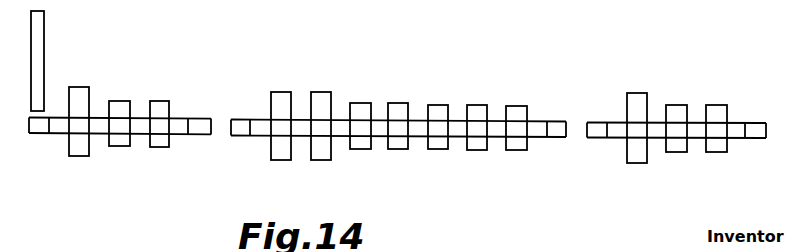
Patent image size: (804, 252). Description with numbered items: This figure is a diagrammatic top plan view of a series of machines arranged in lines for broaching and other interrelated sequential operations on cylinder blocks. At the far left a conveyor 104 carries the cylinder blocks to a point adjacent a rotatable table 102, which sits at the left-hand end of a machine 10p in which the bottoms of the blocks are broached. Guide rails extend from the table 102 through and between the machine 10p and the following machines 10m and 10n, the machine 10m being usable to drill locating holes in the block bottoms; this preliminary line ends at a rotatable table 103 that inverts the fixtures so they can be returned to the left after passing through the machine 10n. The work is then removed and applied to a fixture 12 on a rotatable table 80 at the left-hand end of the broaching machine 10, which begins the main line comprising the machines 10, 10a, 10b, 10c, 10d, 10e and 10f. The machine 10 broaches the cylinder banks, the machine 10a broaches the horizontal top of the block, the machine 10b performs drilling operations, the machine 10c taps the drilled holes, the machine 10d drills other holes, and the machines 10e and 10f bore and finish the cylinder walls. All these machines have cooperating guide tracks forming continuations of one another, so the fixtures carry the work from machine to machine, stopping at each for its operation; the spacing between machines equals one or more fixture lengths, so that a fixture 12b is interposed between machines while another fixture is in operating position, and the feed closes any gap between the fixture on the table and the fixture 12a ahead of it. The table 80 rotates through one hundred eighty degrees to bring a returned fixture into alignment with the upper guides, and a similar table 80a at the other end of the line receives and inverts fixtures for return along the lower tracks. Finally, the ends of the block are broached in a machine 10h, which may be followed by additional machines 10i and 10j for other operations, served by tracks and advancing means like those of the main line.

The broaching machine 10 is at (280, 97).
The machine 10a is at (320, 95).
The machine 10b is at (363, 110).
The machine 10c is at (402, 100).
The machine 10d is at (439, 111).
The machine 10e is at (479, 110).
The machine 10f is at (515, 113).
The machine 10h is at (632, 100).
The machine 10i is at (677, 112).
The machine 10j is at (715, 112).
The machine 10m is at (122, 100).
The machine 10n is at (153, 104).
The machine 10p is at (75, 95).
The fixture 12 is at (281, 128).
The fixture 12a is at (258, 127).
The fixture 12b is at (300, 129).
The rotatable table 80 is at (242, 130).
The table 80a is at (557, 133).
The rotatable table 102 is at (40, 127).
The rotatable table 103 is at (202, 129).
The conveyor 104 is at (45, 43).